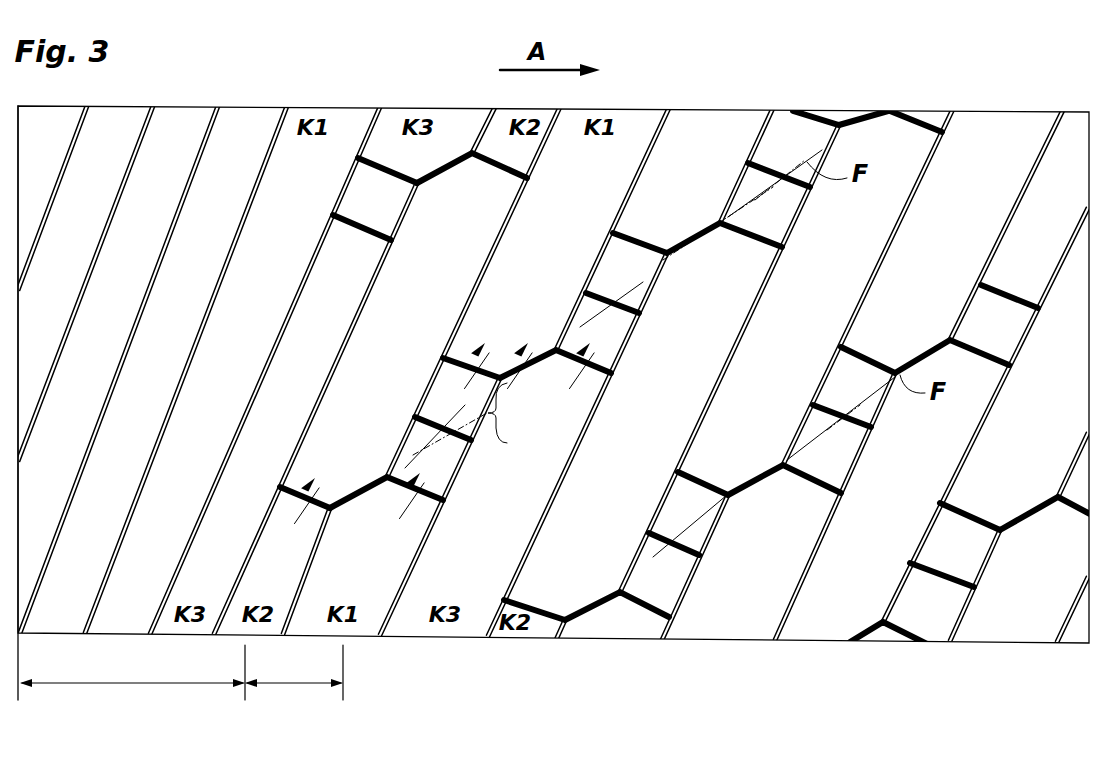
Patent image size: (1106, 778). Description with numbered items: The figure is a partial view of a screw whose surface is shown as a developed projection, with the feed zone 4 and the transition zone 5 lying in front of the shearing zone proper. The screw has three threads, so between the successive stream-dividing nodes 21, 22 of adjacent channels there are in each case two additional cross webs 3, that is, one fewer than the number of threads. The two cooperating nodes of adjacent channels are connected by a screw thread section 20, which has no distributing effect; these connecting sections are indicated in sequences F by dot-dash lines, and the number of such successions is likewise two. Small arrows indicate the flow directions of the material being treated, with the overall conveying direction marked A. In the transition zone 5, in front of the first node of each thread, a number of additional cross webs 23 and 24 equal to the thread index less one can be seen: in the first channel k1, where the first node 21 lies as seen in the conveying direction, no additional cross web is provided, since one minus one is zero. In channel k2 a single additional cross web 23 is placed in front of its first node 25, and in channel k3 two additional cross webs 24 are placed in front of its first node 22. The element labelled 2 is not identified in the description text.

The channel wall 2 is at (480, 280).
The additional cross web 3 is at (597, 367).
The feed zone 4 is at (132, 687).
The transition zone 5 is at (294, 687).
The screw thread section 20 is at (495, 429).
The stream-dividing node 21 is at (363, 573).
The stream-dividing node 22 is at (533, 430).
The additional cross web 23 is at (290, 498).
The additional cross web 24 is at (352, 220).
The first node 25 is at (490, 155).